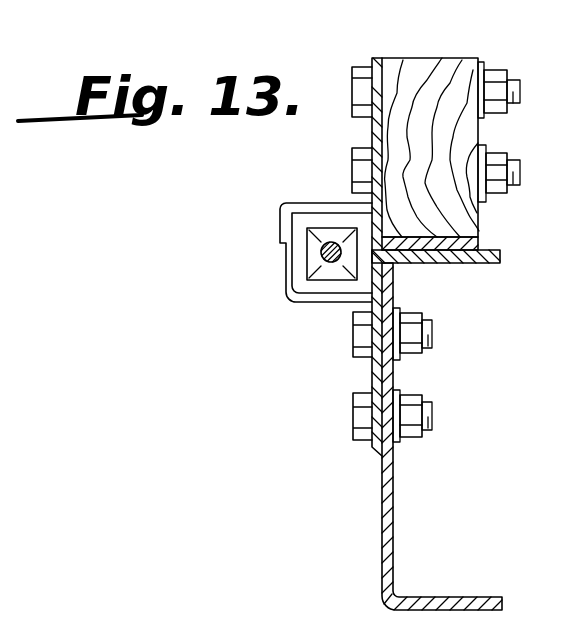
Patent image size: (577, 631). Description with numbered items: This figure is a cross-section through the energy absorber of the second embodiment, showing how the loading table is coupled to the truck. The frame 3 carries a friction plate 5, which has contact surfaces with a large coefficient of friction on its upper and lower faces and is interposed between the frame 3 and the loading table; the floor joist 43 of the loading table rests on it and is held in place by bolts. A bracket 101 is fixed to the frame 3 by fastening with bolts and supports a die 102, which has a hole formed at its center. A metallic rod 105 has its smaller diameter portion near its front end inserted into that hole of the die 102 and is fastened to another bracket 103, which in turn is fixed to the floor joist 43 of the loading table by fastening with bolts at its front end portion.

The frame 3 is at (383, 502).
The friction plate 5 is at (474, 243).
The floor joist 43 is at (466, 73).
The bracket 101 is at (329, 262).
The die 102 is at (318, 262).
The bracket 103 is at (337, 203).
The metallic rod 105 is at (297, 306).